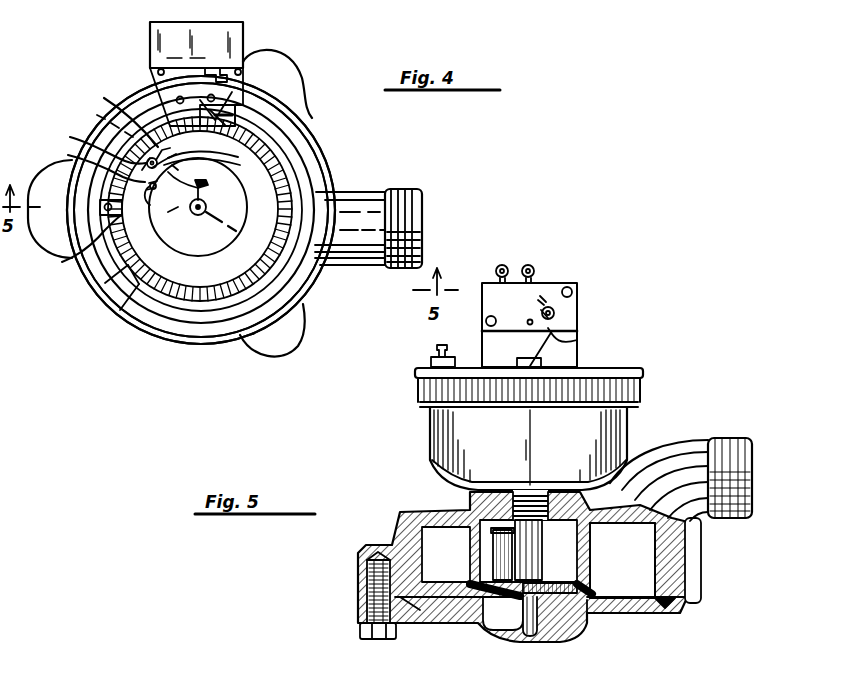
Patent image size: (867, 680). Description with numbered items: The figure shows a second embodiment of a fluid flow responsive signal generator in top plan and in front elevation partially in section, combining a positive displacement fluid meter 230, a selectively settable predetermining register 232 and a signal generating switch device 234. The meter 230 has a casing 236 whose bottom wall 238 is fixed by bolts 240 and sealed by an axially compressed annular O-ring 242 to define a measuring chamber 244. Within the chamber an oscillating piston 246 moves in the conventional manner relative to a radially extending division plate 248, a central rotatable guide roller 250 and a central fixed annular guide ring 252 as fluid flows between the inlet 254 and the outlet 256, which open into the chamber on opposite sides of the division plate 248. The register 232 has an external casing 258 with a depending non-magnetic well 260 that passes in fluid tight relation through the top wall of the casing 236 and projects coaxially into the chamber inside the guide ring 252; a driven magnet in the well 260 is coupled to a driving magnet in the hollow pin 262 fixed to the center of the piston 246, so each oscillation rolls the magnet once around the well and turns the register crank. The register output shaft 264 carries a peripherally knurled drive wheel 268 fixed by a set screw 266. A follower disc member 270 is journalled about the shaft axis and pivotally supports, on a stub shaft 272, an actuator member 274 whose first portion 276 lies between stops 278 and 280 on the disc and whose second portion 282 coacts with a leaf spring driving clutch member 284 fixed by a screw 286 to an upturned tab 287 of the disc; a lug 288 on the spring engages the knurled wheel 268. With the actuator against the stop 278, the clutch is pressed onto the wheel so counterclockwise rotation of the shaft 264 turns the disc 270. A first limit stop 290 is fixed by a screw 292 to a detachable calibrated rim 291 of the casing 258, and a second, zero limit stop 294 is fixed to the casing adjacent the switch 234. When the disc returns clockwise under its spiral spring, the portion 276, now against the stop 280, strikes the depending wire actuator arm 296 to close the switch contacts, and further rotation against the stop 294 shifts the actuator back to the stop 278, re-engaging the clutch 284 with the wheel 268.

In FIG. 4, the fluid meter 230 is at (331, 140).
In FIG. 5, the fluid meter 230 is at (388, 531).
In FIG. 4, the predetermining register 232 is at (98, 296).
In FIG. 5, the predetermining register 232 is at (421, 426).
In FIG. 4, the signal generating switch device 234 is at (259, 38).
In FIG. 5, the signal generating switch device 234 is at (588, 300).
In FIG. 5, the casing 236 is at (367, 583).
In FIG. 5, the bottom wall 238 is at (475, 603).
In FIG. 5, the bolts 240 is at (378, 639).
In FIG. 5, the O-ring 242 is at (678, 607).
In FIG. 5, the measuring chamber 244 is at (448, 515).
In FIG. 5, the oscillating piston 246 is at (428, 612).
In FIG. 5, the division plate 248 is at (615, 598).
In FIG. 5, the guide roller 250 is at (540, 622).
In FIG. 5, the guide ring 252 is at (480, 568).
In FIG. 4, the inlet 254 is at (410, 208).
In FIG. 5, the inlet 254 is at (728, 440).
In FIG. 5, the outlet 256 is at (698, 578).
In FIG. 4, the external casing 258 is at (105, 315).
In FIG. 5, the external casing 258 is at (432, 452).
In FIG. 5, the well 260 is at (558, 540).
In FIG. 5, the hollow pin 262 is at (482, 550).
In FIG. 4, the output shaft 264 is at (200, 205).
In FIG. 4, the set screw 266 is at (210, 182).
In FIG. 4, the drive wheel 268 is at (192, 252).
In FIG. 4, the follower disc member 270 is at (120, 322).
In FIG. 4, the stub shaft 272 is at (160, 149).
In FIG. 4, the actuator member 274 is at (89, 164).
In FIG. 4, the first portion 276 is at (97, 115).
In FIG. 4, the stop 278 is at (90, 144).
In FIG. 4, the stop 280 is at (114, 117).
In FIG. 4, the second portion 282 is at (182, 156).
In FIG. 4, the driving clutch member 284 is at (165, 172).
In FIG. 4, the screw 286 is at (150, 203).
In FIG. 4, the upturned tab 287 is at (160, 205).
In FIG. 4, the lug 288 is at (240, 160).
In FIG. 4, the first limit stop 290 is at (76, 245).
In FIG. 5, the first limit stop 290 is at (460, 366).
In FIG. 4, the calibrated rim 291 is at (198, 330).
In FIG. 4, the screw 292 is at (100, 213).
In FIG. 5, the screw 292 is at (431, 360).
In FIG. 4, the second limit stop 294 is at (304, 105).
In FIG. 4, the wire actuator arm 296 is at (196, 97).
In FIG. 5, the wire actuator arm 296 is at (577, 340).